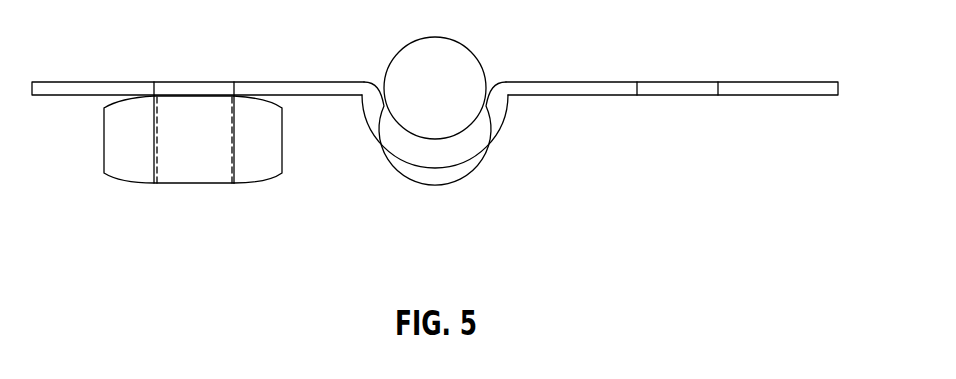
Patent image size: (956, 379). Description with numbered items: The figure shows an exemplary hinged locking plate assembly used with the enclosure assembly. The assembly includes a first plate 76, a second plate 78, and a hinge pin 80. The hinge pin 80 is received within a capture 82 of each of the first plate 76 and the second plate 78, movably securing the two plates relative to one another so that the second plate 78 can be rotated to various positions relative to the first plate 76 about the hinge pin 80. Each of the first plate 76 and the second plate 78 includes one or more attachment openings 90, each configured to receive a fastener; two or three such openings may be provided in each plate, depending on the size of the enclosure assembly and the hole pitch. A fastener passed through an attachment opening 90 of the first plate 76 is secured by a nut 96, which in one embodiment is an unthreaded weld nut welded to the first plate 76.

The first plate 76 is at (68, 88).
The second plate 78 is at (795, 90).
The hinge pin 80 is at (427, 120).
The capture 82 is at (475, 138).
The attachment opening 90 is at (237, 88).
The nut 96 is at (262, 168).